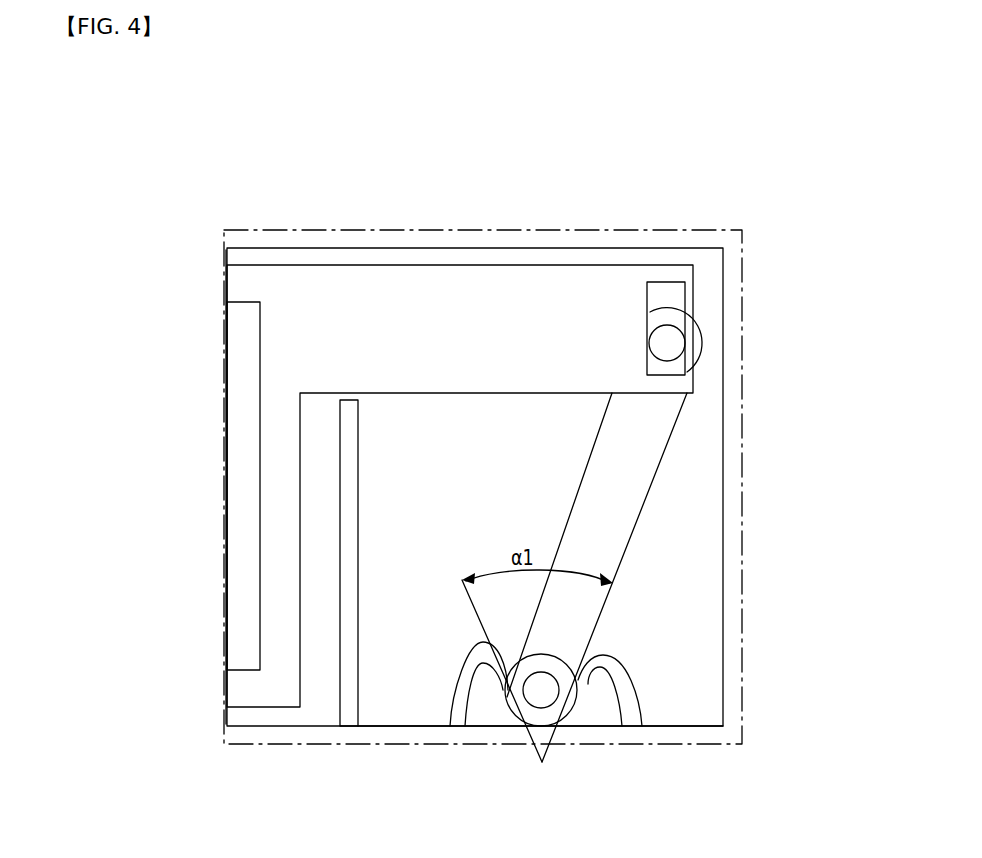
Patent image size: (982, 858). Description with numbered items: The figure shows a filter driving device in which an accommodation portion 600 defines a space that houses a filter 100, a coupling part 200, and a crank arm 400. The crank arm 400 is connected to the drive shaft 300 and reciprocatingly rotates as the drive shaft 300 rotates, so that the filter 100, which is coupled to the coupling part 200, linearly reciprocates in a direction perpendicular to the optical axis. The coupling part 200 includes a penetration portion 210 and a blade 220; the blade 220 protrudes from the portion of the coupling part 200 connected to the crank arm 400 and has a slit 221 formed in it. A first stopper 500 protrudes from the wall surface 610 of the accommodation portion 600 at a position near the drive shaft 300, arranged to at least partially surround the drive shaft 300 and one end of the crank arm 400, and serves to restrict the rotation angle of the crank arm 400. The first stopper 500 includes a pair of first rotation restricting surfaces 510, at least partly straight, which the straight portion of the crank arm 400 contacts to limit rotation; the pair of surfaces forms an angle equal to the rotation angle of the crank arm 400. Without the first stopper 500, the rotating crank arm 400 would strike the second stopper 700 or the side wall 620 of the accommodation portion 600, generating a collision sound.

The filter 100 is at (243, 523).
The coupling part 200 is at (588, 162).
The penetration portion 210 is at (237, 327).
The blade 220 is at (454, 283).
The slit 221 is at (667, 300).
The drive shaft 300 is at (543, 688).
The crank arm 400 is at (605, 563).
The first stopper 500 is at (541, 724).
The first rotation restricting surface 510 is at (487, 683).
The accommodation portion 600 is at (232, 164).
The wall surface 610 is at (375, 663).
The side wall 620 is at (727, 474).
The second stopper 700 is at (345, 682).